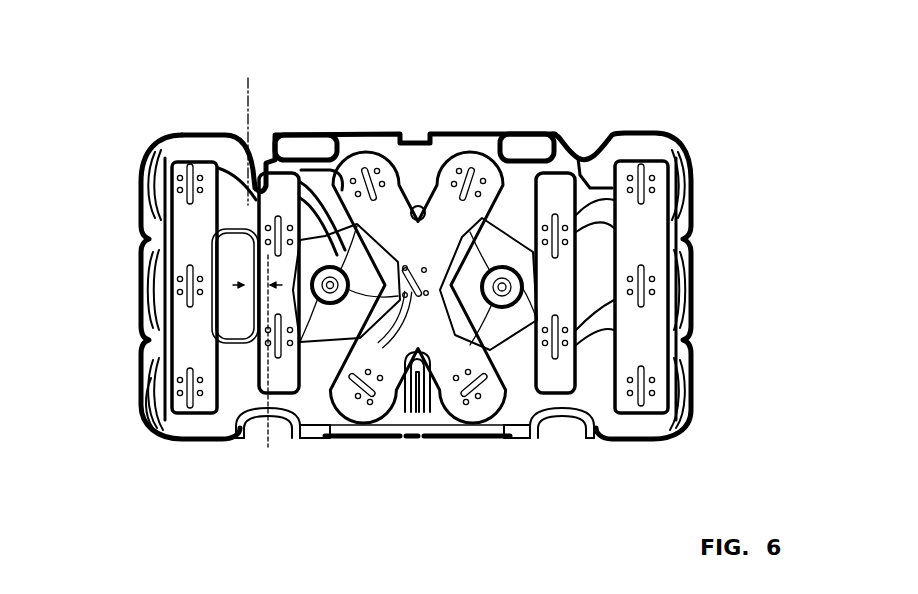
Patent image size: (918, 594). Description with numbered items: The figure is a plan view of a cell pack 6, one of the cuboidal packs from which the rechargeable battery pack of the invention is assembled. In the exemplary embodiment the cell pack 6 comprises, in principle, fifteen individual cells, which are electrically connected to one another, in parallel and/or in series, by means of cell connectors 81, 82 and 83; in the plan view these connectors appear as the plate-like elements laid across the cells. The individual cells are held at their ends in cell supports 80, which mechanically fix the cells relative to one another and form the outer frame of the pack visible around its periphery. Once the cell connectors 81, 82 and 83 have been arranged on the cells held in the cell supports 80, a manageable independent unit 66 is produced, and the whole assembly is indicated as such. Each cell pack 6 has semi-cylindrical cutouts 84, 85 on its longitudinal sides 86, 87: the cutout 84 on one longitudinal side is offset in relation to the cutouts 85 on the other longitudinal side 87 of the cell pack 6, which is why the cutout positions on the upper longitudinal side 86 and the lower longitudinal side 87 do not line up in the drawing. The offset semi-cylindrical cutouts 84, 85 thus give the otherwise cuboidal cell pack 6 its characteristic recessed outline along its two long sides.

The cell pack 6 is at (145, 420).
The manageable independent unit 66 is at (710, 240).
The cell supports 80 is at (173, 147).
The cell connector 81 is at (217, 200).
The cell connector 82 is at (520, 210).
The cell connector 83 is at (658, 165).
The semi-cylindrical cutout 84 is at (246, 140).
The semi-cylindrical cutout 85 is at (262, 430).
The longitudinal side 86 is at (455, 128).
The longitudinal side 87 is at (445, 433).